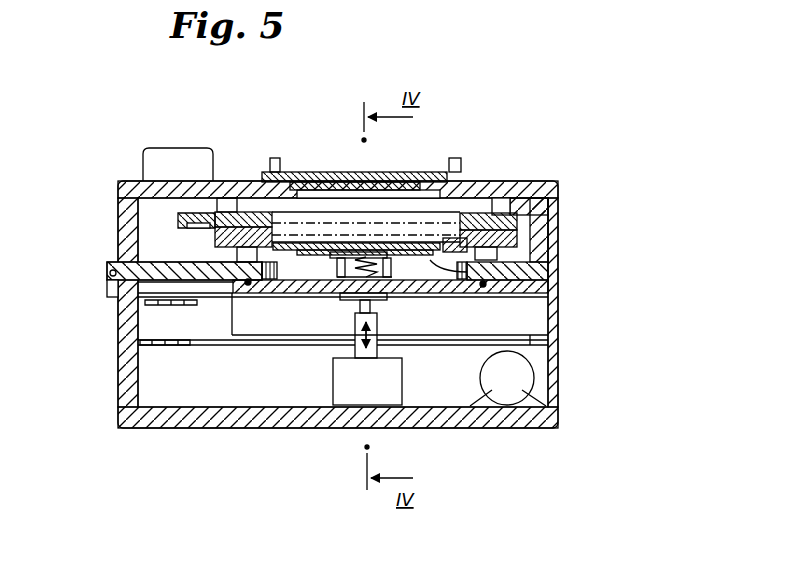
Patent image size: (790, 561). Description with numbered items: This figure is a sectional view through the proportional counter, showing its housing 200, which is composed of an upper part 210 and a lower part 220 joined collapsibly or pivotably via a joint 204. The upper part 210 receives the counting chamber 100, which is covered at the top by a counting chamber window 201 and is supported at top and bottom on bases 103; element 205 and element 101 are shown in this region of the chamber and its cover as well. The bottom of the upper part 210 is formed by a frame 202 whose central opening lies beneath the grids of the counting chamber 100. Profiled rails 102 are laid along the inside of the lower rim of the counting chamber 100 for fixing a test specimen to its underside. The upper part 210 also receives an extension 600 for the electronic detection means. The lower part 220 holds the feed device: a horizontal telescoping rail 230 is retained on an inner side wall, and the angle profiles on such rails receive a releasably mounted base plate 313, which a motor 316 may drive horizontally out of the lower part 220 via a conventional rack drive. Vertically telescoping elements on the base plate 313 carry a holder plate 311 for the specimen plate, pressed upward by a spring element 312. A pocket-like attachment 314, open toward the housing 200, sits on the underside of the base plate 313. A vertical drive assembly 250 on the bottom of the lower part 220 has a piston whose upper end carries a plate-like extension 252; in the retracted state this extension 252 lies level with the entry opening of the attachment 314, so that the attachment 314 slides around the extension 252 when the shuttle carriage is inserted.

The counting chamber 100 is at (390, 195).
The cylinder end block 101 is at (362, 212).
The profiled rails 102 is at (518, 236).
The bases 103 is at (505, 199).
The housing 200 is at (357, 290).
The counting chamber window 201 is at (297, 182).
The frame 202 is at (157, 263).
The joint 204 is at (105, 290).
The cover 205 is at (340, 182).
The upper part 210 is at (127, 199).
The lower part 220 is at (195, 430).
The telescoping rail 230 is at (543, 320).
The vertical drive assembly 250 is at (367, 359).
The plate-like extension 252 is at (345, 302).
The holder plate 311 is at (547, 270).
The spring element 312 is at (362, 260).
The base plate 313 is at (547, 288).
The pocket-like attachment 314 is at (373, 275).
The motor 316 is at (508, 378).
The extension 600 is at (147, 166).